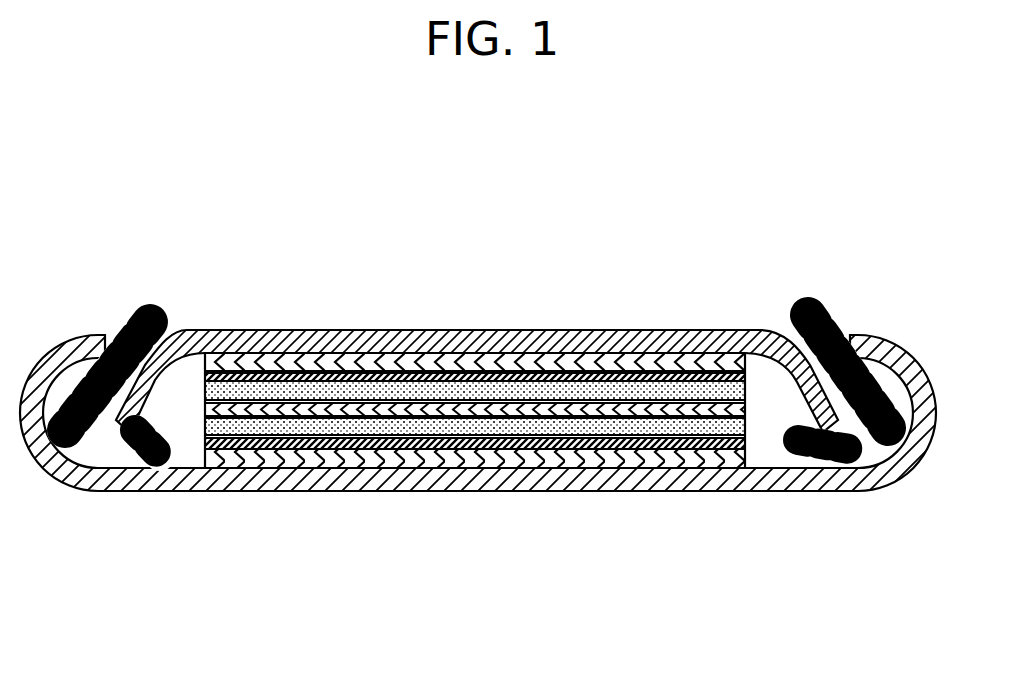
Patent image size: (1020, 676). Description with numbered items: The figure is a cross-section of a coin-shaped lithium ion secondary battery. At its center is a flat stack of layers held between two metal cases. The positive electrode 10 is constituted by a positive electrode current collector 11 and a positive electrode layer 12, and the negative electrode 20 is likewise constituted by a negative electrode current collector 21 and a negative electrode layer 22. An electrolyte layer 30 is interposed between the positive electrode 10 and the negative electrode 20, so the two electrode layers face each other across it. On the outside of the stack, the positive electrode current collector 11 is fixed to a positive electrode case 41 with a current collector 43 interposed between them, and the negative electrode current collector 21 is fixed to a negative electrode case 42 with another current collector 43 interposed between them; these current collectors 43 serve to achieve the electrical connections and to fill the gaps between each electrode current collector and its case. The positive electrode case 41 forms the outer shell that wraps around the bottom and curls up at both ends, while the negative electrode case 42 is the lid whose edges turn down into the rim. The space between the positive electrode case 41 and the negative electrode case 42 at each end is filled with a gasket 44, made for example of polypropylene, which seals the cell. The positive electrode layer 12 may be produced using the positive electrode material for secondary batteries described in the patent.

The positive electrode 10 is at (475, 530).
The positive electrode current collector 11 is at (500, 447).
The positive electrode layer 12 is at (560, 432).
The negative electrode 20 is at (475, 298).
The negative electrode current collector 21 is at (565, 375).
The negative electrode layer 22 is at (617, 392).
The electrolyte layer 30 is at (440, 415).
The positive electrode case 41 is at (690, 490).
The negative electrode case 42 is at (400, 345).
The current collector 43 is at (478, 355).
The gasket 44 is at (148, 318).